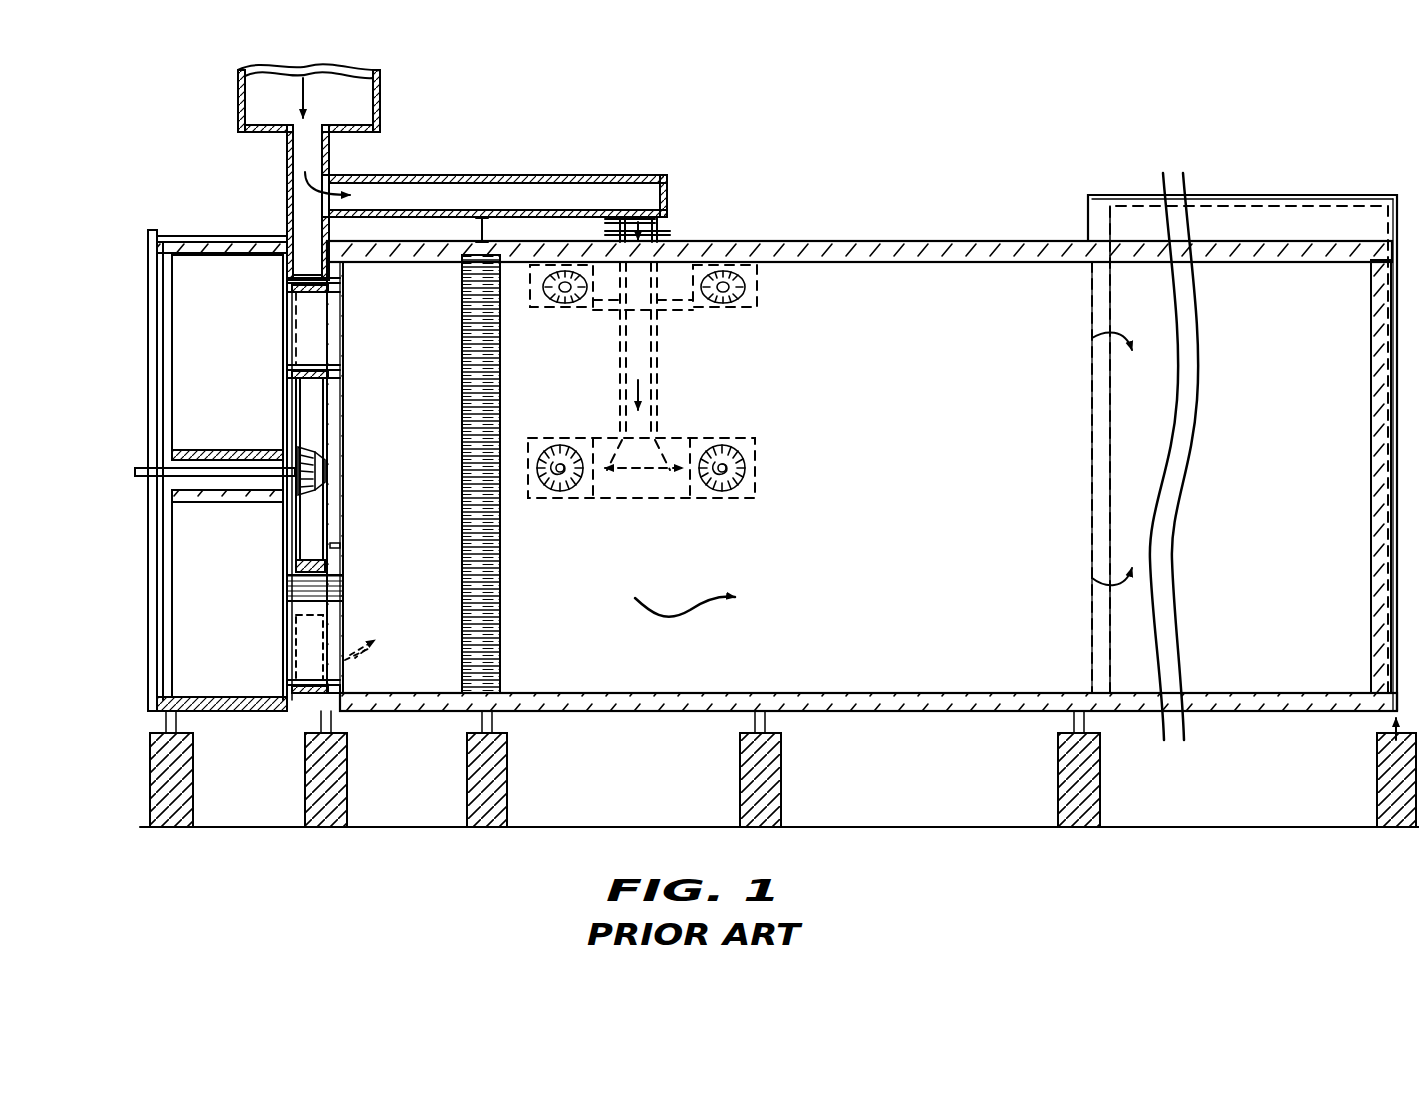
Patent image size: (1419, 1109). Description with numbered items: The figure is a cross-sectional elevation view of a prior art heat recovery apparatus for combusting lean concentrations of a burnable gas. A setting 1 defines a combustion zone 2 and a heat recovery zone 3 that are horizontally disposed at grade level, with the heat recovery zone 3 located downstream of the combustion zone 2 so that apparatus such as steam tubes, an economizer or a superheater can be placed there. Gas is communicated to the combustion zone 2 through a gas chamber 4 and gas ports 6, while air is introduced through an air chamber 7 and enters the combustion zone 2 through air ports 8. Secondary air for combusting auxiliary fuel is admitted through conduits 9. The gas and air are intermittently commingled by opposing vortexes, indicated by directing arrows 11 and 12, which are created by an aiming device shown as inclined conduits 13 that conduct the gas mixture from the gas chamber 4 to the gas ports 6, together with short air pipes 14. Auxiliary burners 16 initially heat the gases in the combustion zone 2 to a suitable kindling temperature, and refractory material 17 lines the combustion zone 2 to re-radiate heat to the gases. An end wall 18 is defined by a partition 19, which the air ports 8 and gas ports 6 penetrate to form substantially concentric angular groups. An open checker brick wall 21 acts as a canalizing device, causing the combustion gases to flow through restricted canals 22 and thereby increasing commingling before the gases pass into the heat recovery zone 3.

The setting 1 is at (836, 236).
The combustion zone 2 is at (717, 477).
The heat recovery zone 3 is at (1242, 456).
The gas chamber 4 is at (215, 470).
The gas ports 6 is at (330, 305).
The air chamber 7 is at (302, 240).
The air ports 8 is at (338, 557).
The conduits 9 is at (505, 188).
The directing arrows 11 is at (302, 330).
The directing arrows 12 is at (352, 654).
The inclined conduits 13 is at (300, 300).
The short air pipes 14 is at (338, 522).
The auxiliary burners 16 is at (560, 305).
The refractory material 17 is at (433, 260).
The end wall 18 is at (334, 414).
The partition 19 is at (336, 376).
The open checker brick wall 21 is at (460, 475).
The restricted canals 22 is at (500, 436).